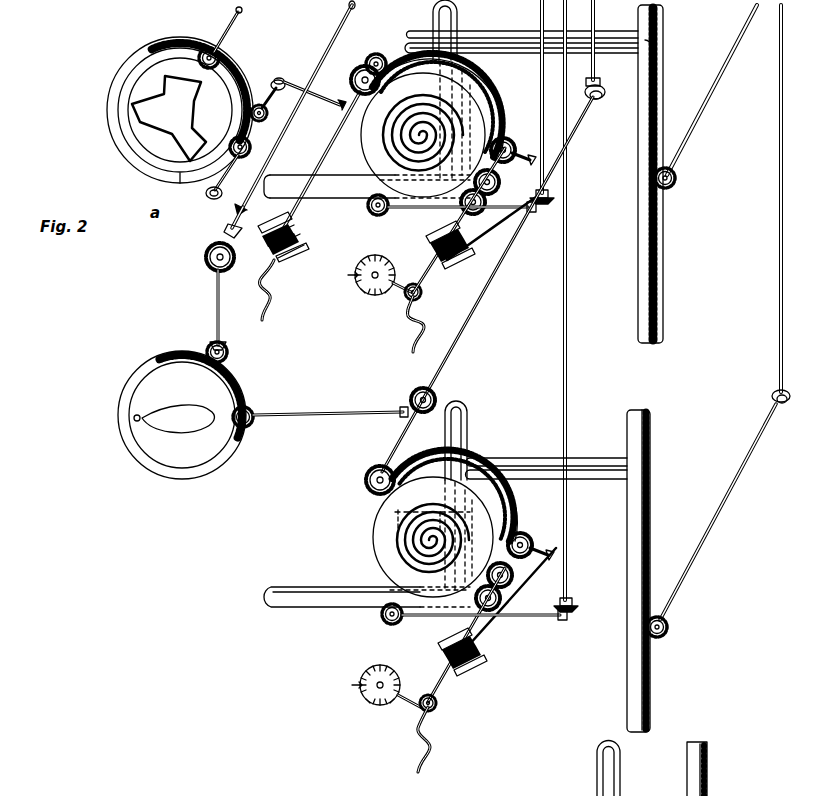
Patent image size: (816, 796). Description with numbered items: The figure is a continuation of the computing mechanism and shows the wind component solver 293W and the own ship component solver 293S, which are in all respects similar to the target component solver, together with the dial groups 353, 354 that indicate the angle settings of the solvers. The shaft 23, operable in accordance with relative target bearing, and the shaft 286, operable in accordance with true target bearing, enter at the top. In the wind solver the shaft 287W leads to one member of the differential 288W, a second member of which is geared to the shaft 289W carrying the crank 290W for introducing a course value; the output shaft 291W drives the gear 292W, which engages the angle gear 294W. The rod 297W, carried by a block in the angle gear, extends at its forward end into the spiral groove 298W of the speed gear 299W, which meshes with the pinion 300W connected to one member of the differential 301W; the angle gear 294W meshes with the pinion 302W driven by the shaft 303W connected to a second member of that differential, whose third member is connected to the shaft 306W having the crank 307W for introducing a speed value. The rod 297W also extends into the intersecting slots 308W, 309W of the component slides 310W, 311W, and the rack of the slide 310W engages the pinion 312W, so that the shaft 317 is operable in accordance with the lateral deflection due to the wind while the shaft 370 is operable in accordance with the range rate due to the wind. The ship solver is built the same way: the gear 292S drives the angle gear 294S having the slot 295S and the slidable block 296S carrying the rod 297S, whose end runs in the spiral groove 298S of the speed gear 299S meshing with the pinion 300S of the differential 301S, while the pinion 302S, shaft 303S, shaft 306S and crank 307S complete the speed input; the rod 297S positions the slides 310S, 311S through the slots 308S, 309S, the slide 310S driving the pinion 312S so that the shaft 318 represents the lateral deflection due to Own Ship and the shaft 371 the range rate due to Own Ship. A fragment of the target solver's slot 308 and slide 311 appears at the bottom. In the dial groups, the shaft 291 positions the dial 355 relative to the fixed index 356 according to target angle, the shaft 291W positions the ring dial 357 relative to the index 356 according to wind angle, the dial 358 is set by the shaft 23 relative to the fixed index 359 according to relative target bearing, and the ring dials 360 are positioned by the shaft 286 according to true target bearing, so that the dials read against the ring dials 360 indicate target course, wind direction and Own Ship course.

The shaft 23 is at (596, 16).
The shaft 286 is at (348, 18).
The shaft 287W is at (228, 272).
The differential 288W is at (282, 268).
The shaft 289W is at (276, 262).
The crank 290W is at (264, 320).
The shaft 291 is at (234, 16).
The shaft 291W is at (328, 149).
The gear 292W is at (361, 68).
The wind component solver 293W is at (399, 62).
The angle gear 294W is at (482, 96).
The rod 297W is at (478, 56).
The spiral groove 298W is at (385, 162).
The speed gear 299W is at (487, 112).
The pinion 300W is at (484, 238).
The differential 301W is at (443, 274).
The pinion 302W is at (516, 136).
The shaft 303W is at (479, 248).
The shaft 306W is at (428, 287).
The crank 307W is at (410, 347).
The slot 308W is at (477, 77).
The slot 309W is at (648, 34).
The component slide 310W is at (288, 188).
The component slide 311W is at (644, 258).
The pinion 312W is at (452, 221).
The shaft 317 is at (540, 17).
The shaft 318 is at (574, 163).
The dial group 353 is at (108, 57).
The dial group 354 is at (112, 405).
The dial 355 is at (134, 96).
The fixed index 356 is at (180, 184).
The ring dial 357 is at (108, 116).
The dial 358 is at (150, 444).
The fixed index 359 is at (185, 344).
The ring dial 360 is at (128, 126).
The shaft 370 is at (736, 40).
The shaft 371 is at (778, 78).
The gear 292S is at (367, 478).
The own ship component solver 293S is at (374, 508).
The angle gear 294S is at (506, 500).
The slot 295S is at (392, 516).
The slidable block 296S is at (398, 532).
The rod 297S is at (398, 540).
The spiral groove 298S is at (430, 560).
The speed gear 299S is at (504, 520).
The pinion 300S is at (548, 572).
The differential 301S is at (462, 693).
The pinion 302S is at (556, 544).
The shaft 303S is at (502, 652).
The shaft 306S is at (438, 702).
The crank 307S is at (424, 766).
The slot 308S is at (466, 402).
The slot 309S is at (504, 462).
The component slide 310S is at (274, 607).
The component slide 311S is at (636, 663).
The pinion 312S is at (392, 624).
The slot 308 is at (600, 755).
The component slide 311 is at (696, 760).